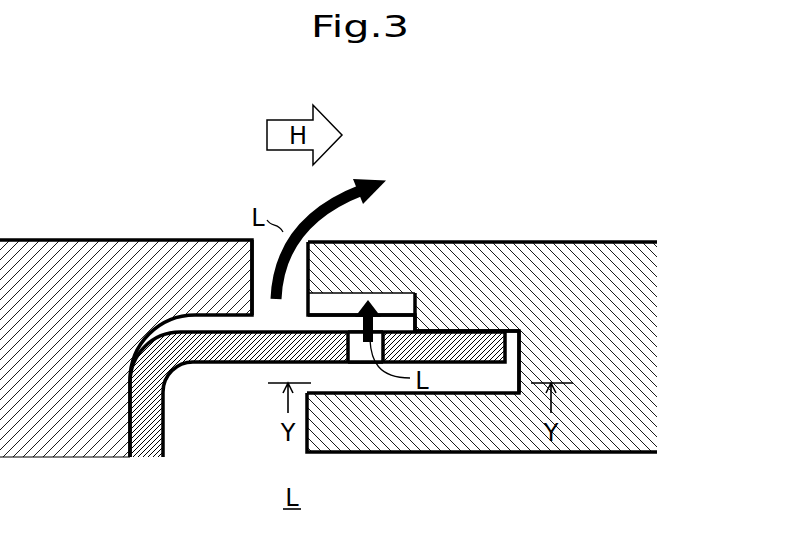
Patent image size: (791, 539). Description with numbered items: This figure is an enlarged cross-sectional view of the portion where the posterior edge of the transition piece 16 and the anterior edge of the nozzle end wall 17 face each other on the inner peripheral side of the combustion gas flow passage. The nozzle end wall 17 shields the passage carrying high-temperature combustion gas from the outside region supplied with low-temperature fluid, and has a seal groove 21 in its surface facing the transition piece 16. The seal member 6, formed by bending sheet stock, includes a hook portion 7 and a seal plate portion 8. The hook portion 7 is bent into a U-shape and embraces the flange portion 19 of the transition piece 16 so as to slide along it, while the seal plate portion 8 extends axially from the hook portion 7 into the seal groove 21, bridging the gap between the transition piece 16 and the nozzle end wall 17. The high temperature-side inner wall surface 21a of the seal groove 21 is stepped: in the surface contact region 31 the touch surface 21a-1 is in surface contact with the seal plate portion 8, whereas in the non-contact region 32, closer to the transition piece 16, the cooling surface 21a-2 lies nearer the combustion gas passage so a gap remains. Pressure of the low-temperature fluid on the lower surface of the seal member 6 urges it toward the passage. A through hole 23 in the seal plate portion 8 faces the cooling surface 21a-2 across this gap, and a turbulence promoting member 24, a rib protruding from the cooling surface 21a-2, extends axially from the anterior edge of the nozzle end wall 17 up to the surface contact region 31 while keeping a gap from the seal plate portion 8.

The seal member 6 is at (317, 428).
The hook portion 7 is at (165, 428).
The seal plate portion 8 is at (218, 368).
The transition piece 16 is at (108, 240).
The nozzle end wall 17 is at (602, 453).
The flange portion 19 is at (67, 452).
The seal groove 21 is at (482, 386).
The high temperature-side inner wall surface 21a is at (572, 268).
The high temperature-side inner wall surface (touch surface) 21a-1 is at (518, 340).
The high temperature-side inner wall surface (cooling surface) 21a-2 is at (410, 297).
The through hole 23 is at (350, 361).
The turbulence promoting member 24 is at (307, 313).
The surface contact region 31 is at (420, 325).
The non-contact region 32 is at (412, 288).